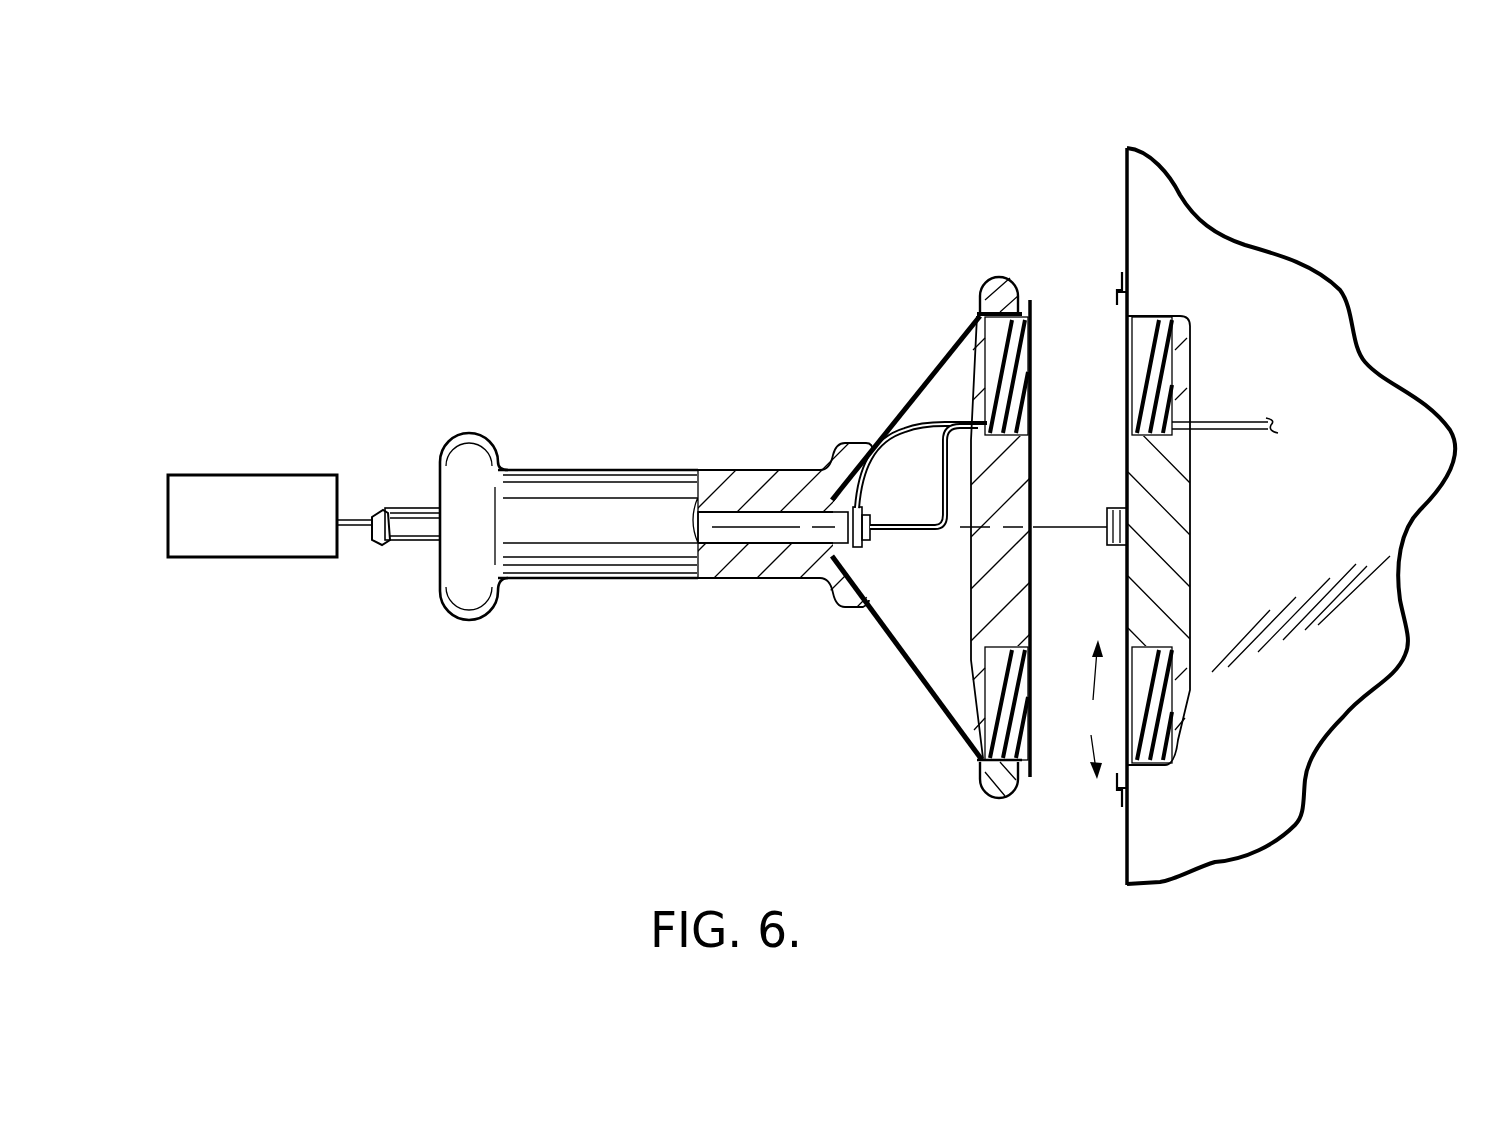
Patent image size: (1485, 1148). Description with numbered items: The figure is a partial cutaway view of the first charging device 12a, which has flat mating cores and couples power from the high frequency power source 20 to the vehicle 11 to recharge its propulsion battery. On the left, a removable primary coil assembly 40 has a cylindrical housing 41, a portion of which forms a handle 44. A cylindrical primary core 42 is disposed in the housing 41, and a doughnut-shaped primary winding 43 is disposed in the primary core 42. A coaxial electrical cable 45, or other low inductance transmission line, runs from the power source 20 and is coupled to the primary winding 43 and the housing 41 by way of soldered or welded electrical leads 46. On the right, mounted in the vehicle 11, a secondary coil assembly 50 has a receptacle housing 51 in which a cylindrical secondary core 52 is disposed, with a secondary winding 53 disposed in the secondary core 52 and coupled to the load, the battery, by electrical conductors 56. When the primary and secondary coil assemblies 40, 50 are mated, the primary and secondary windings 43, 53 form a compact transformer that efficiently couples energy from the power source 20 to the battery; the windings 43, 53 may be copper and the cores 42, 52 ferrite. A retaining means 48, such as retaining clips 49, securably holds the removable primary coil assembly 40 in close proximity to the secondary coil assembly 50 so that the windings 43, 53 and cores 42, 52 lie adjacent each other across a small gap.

The vehicle 11 is at (1064, 111).
The first charging device 12a is at (530, 300).
The high frequency power source 20 is at (258, 557).
The removable primary coil assembly 40 is at (758, 345).
The cylindrical housing 41 is at (760, 480).
The cylindrical primary core 42 is at (997, 573).
The doughnut-shaped primary winding 43 is at (1020, 390).
The handle 44 is at (602, 580).
The coaxial electrical cable 45 is at (400, 545).
The electrical leads 46 is at (937, 478).
The retaining means 48 is at (1086, 709).
The retaining clips 49 is at (1117, 293).
The secondary coil assembly 50 is at (1383, 216).
The receptacle housing 51 is at (1228, 262).
The cylindrical secondary core 52 is at (1178, 577).
The secondary winding 53 is at (1137, 375).
The electrical conductors 56 is at (1247, 421).